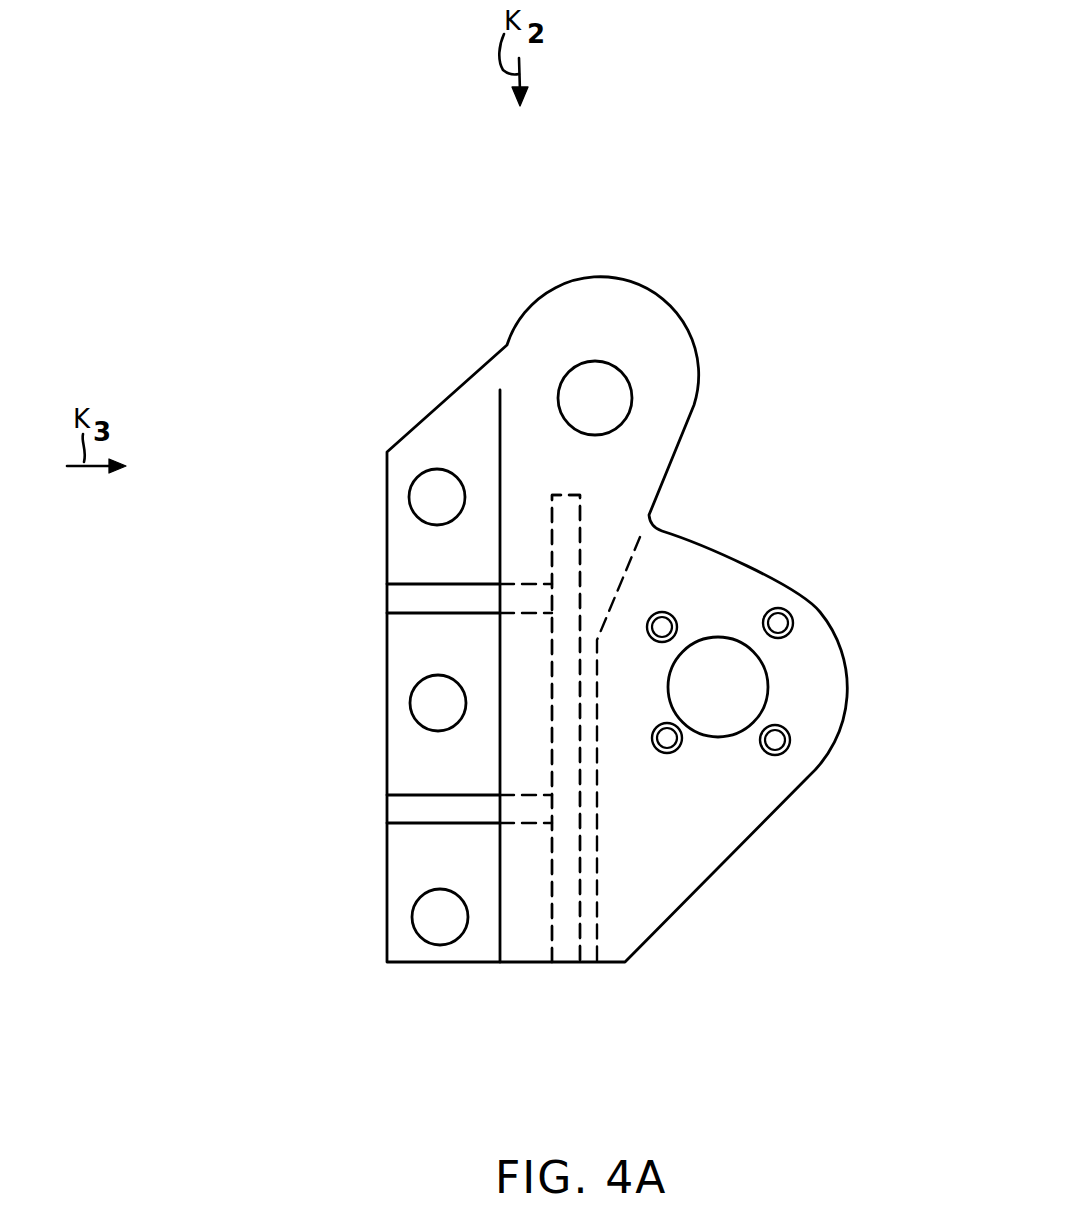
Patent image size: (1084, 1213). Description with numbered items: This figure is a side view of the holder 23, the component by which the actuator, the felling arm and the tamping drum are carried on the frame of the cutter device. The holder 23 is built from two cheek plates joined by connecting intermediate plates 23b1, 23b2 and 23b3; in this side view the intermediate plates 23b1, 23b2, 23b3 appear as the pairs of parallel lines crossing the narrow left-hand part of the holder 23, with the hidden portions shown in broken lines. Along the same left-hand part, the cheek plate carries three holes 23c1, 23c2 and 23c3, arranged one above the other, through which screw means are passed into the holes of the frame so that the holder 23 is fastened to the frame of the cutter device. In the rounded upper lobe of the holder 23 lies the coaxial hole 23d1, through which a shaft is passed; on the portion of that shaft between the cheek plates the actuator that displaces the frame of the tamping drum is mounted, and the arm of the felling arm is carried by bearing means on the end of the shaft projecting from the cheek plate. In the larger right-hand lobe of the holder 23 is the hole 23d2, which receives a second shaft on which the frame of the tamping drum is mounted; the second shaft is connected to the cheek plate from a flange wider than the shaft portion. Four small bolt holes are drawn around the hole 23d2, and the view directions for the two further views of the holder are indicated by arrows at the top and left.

The holder 23 is at (700, 318).
The intermediate plate 23b1 is at (410, 593).
The intermediate plate 23b2 is at (405, 810).
The intermediate plate 23b3 is at (565, 927).
The hole 23c1 is at (425, 490).
The hole 23c2 is at (425, 695).
The hole 23c3 is at (425, 915).
The coaxial hole 23d1 is at (580, 388).
The hole 23d2 is at (745, 676).